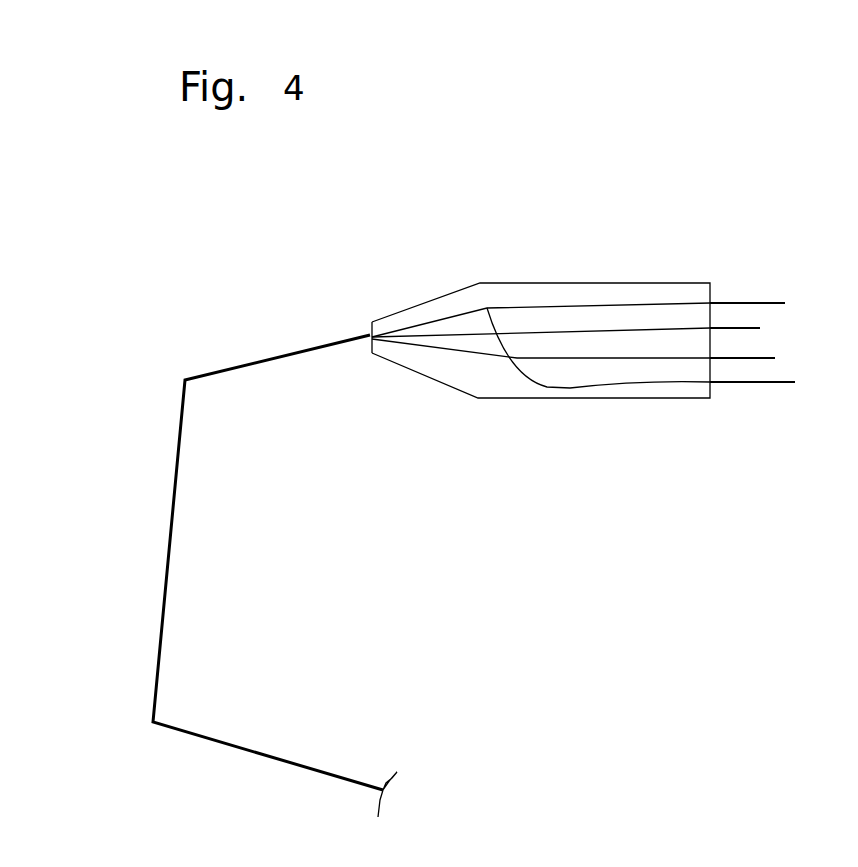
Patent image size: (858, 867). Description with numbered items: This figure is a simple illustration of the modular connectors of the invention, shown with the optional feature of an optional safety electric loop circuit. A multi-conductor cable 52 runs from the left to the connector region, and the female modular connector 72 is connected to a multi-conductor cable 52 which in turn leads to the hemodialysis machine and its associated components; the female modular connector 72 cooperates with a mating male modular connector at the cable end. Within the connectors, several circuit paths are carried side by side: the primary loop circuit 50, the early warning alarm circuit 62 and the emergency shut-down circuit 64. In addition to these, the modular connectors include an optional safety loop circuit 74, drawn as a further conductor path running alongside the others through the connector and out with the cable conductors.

The primary loop circuit 50 is at (525, 303).
The multi-conductor cable 52 is at (170, 650).
The early warning alarm circuit 62 is at (612, 330).
The emergency shut-down circuit 64 is at (571, 362).
The female modular connector 72 is at (625, 283).
The optional safety loop circuit 74 is at (670, 382).